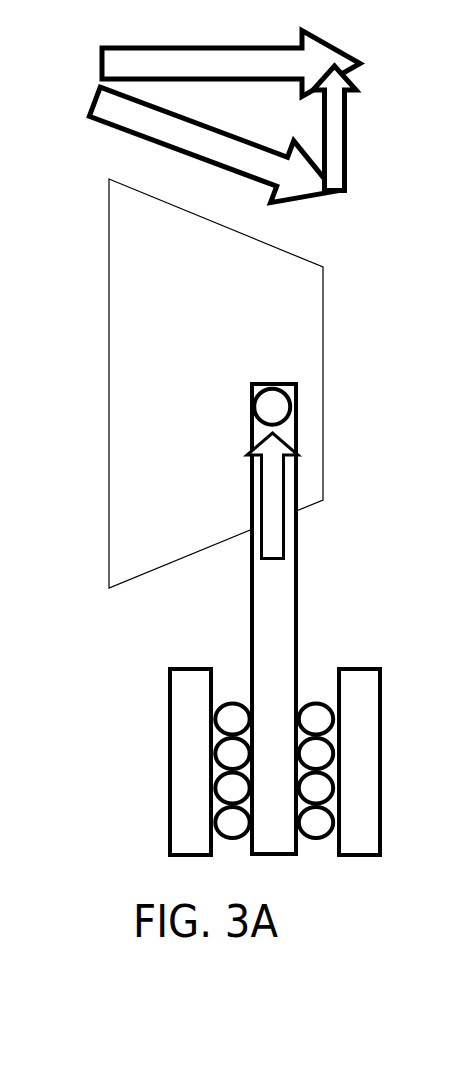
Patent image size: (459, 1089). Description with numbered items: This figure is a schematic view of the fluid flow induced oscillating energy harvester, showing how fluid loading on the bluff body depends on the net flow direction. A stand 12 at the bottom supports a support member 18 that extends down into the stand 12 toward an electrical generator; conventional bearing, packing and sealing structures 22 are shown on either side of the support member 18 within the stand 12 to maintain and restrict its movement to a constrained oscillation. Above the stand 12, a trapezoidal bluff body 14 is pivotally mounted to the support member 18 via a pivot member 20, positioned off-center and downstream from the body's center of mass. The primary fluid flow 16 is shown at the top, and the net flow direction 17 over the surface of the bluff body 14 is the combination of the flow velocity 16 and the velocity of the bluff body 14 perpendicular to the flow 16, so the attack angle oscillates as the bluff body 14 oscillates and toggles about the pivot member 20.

The stand 12 is at (382, 683).
The bluff body 14 is at (110, 380).
The fluid flow 16 is at (98, 47).
The net flow direction 17 is at (120, 132).
The support member 18 is at (297, 623).
The pivot member 20 is at (298, 402).
The bearing, packing and sealing structures 22 is at (313, 700).